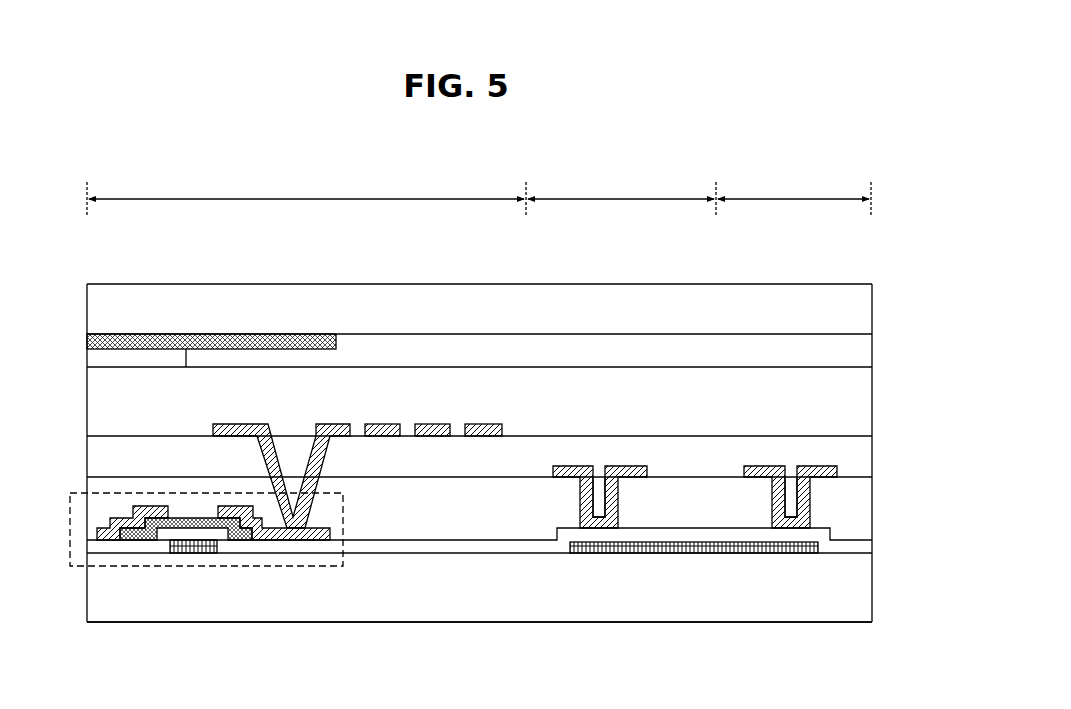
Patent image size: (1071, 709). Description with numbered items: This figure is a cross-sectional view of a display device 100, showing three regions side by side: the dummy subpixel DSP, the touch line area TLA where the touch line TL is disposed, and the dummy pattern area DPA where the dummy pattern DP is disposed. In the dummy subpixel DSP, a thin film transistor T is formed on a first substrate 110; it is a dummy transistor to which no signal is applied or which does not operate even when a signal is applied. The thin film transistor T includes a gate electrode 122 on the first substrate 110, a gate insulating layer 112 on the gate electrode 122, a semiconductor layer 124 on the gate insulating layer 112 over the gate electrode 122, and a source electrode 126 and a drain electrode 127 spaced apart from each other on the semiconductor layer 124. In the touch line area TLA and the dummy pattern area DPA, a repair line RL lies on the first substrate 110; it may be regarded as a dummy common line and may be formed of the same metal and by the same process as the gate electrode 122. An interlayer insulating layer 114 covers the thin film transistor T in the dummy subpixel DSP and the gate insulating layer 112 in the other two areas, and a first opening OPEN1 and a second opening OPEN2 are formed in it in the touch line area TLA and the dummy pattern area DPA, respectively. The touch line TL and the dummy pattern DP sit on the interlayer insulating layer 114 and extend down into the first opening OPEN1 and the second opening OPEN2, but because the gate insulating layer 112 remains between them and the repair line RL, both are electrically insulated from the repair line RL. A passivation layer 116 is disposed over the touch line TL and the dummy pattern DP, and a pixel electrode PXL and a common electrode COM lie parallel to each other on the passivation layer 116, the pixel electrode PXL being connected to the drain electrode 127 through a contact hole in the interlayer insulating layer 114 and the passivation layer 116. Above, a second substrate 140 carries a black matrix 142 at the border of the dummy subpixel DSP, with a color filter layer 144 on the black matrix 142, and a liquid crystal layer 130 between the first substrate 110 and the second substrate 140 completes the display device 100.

The display device 100 is at (873, 143).
The first substrate 110 is at (857, 595).
The gate insulating layer 112 is at (857, 550).
The interlayer insulating layer 114 is at (857, 512).
The passivation layer 116 is at (857, 464).
The gate electrode 122 is at (192, 553).
The semiconductor layer 124 is at (247, 540).
The source electrode 126 is at (113, 523).
The drain electrode 127 is at (300, 540).
The liquid crystal layer 130 is at (857, 410).
The second substrate 140 is at (857, 316).
The black matrix 142 is at (240, 336).
The color filter layer 144 is at (372, 352).
The thin film transistor T is at (143, 570).
The pixel electrode PXL is at (348, 437).
The common electrode COM is at (478, 437).
The touch line TL is at (630, 466).
The dummy pattern DP is at (762, 466).
The first opening OPEN1 is at (619, 508).
The second opening OPEN2 is at (810, 509).
The repair line RL is at (753, 543).
The dummy subpixel DSP is at (305, 199).
The touch line area TLA is at (620, 199).
The dummy pattern area DPA is at (793, 199).